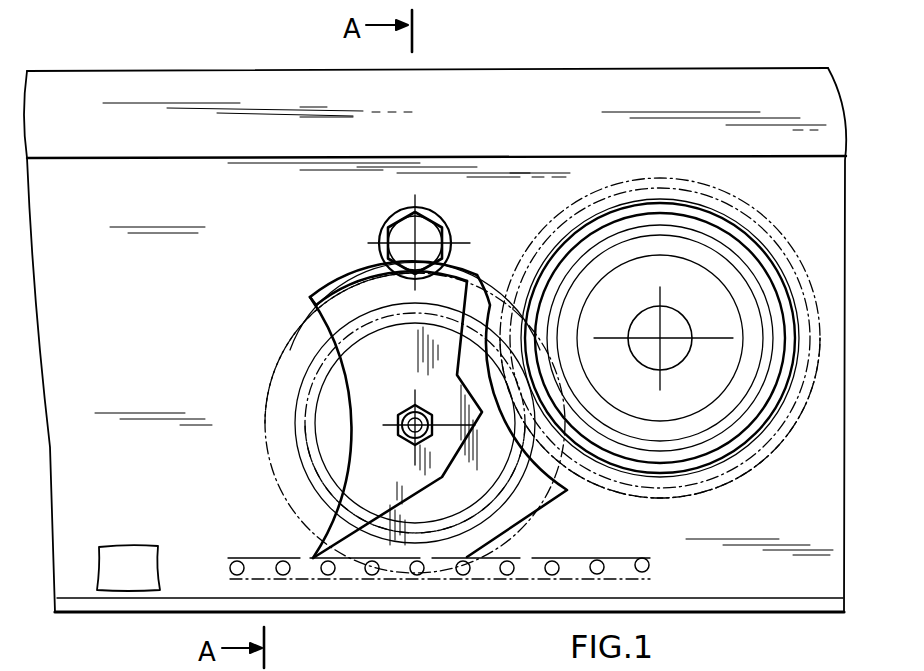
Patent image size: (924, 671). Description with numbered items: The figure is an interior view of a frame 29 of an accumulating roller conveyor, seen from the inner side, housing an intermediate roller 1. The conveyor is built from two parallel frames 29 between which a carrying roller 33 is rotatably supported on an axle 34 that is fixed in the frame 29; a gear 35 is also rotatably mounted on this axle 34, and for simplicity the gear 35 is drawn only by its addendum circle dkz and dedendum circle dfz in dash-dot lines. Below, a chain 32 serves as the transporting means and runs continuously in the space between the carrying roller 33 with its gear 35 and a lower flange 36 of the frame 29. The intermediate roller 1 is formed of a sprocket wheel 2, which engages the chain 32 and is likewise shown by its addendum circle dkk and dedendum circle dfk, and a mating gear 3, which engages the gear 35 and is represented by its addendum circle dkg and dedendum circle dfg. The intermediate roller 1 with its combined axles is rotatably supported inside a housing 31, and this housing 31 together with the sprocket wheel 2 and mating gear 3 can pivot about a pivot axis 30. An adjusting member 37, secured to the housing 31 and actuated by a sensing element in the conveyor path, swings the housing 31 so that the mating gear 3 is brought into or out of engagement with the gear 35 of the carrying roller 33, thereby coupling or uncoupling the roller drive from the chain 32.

The intermediate roller 1 is at (300, 289).
The sprocket wheel 2 is at (290, 340).
The mating gear 3 is at (315, 377).
The frame 29 is at (816, 80).
The pivot axis 30 is at (418, 241).
The housing 31 is at (341, 277).
The chain 32 is at (271, 560).
The carrying roller 33 is at (740, 453).
The axle 34 is at (662, 337).
The gear 35 is at (790, 427).
The lower flange 36 is at (793, 604).
The adjusting member 37 is at (131, 551).
The addendum circle of the sprocket wheel dkk is at (266, 403).
The dedendum circle of the sprocket wheel dfk is at (296, 432).
The dedendum circle of the gear dfz is at (750, 218).
The addendum circle of the gear dkz is at (786, 240).
The addendum circle of the mating gear dkg is at (516, 480).
The dedendum circle of the mating gear dfg is at (488, 504).